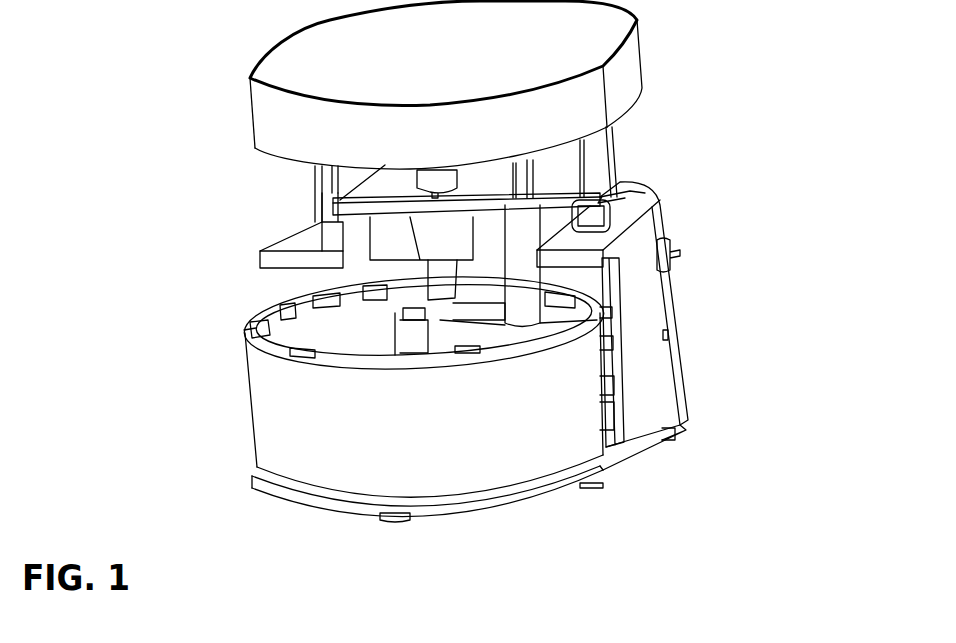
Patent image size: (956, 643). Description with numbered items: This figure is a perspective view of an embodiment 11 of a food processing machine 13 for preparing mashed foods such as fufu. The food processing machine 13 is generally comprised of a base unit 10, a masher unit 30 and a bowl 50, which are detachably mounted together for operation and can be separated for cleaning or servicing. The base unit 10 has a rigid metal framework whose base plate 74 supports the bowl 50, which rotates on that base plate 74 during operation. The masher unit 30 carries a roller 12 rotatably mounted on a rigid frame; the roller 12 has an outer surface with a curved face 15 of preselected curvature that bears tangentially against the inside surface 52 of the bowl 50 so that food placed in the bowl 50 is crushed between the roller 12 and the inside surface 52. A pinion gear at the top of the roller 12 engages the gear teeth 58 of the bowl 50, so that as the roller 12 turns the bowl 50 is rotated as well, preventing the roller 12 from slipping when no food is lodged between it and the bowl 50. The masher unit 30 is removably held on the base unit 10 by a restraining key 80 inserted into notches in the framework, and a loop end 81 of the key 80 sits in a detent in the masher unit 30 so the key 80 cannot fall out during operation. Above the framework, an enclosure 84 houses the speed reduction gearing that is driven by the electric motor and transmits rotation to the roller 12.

The base unit 10 is at (703, 60).
The embodiment 11 is at (740, 305).
The roller 12 is at (413, 335).
The food processing machine 13 is at (718, 187).
The curved face 15 is at (393, 330).
The masher unit 30 is at (417, 300).
The bowl 50 is at (424, 405).
The inside surface 52 is at (340, 325).
The gear teeth 58 is at (270, 340).
The base plate 74 is at (535, 497).
The restraining key 80 is at (620, 217).
The loop end 81 is at (602, 197).
The enclosure 84 is at (393, 70).